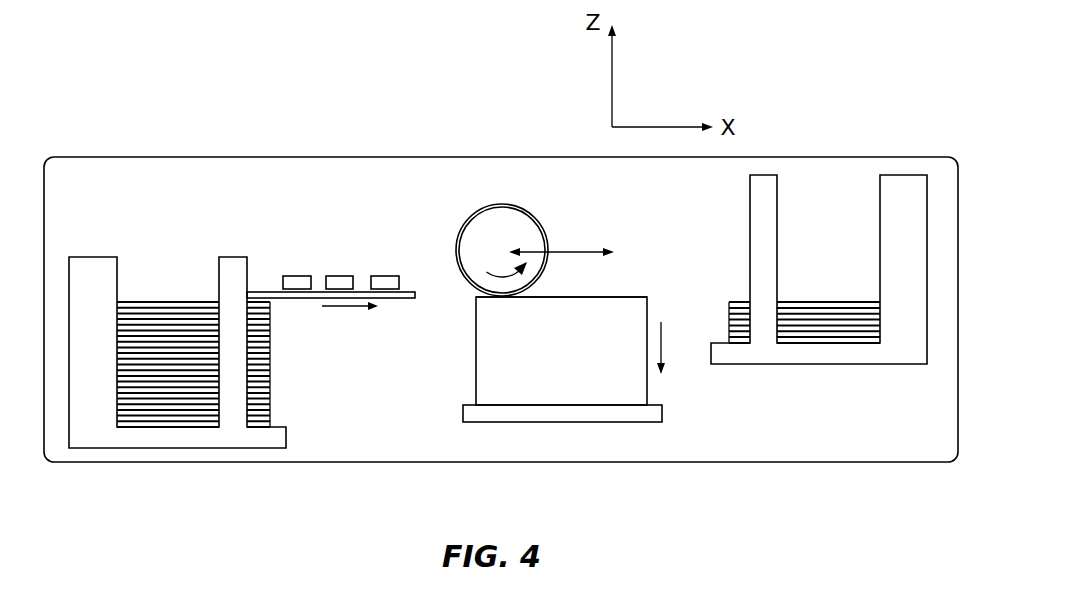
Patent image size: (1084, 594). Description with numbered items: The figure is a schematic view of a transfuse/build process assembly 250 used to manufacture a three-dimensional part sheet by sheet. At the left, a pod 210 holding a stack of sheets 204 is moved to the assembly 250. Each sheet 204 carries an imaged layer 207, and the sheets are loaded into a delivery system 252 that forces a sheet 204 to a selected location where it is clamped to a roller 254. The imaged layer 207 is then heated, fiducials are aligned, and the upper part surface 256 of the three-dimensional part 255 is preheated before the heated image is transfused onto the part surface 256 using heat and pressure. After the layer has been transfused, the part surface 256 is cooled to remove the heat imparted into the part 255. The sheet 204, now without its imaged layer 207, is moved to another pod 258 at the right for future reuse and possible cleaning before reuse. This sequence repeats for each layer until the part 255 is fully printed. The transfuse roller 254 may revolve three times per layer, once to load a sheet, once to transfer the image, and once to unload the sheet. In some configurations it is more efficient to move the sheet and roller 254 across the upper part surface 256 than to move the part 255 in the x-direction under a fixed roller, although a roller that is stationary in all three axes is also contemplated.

The transfuse/build process assembly 250 is at (396, 178).
The sheet 204 is at (162, 302).
The imaged layer 207 is at (340, 276).
The pod 210 is at (128, 440).
The delivery system 252 is at (343, 309).
The roller 254 is at (487, 232).
The 3D part 255 is at (482, 372).
The part surface 256 is at (629, 296).
The pod 258 is at (900, 343).